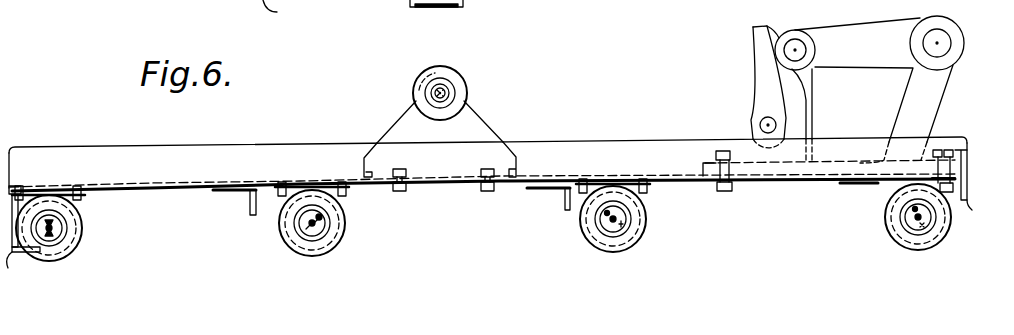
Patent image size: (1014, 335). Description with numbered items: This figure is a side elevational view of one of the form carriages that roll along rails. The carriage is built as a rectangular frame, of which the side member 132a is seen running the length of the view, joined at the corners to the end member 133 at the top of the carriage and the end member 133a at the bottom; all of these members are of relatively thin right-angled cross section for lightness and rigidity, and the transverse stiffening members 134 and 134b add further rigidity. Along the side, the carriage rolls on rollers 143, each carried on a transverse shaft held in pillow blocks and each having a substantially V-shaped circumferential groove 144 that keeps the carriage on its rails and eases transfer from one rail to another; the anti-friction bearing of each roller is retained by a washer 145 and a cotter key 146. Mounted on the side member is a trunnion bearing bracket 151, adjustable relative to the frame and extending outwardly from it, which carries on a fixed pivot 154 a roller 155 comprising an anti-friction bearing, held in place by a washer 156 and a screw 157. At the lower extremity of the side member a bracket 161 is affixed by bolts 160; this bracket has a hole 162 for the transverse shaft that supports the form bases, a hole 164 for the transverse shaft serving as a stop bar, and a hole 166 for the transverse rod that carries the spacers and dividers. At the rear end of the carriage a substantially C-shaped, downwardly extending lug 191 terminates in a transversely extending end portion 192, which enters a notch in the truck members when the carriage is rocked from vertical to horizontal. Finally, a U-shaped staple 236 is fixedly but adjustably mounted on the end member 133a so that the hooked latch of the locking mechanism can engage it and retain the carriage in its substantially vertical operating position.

The side member 132a is at (272, 147).
The end member 133 is at (17, 186).
The end member 133a is at (972, 150).
The transverse stiffening member 134 is at (233, 197).
The transverse stiffening member 134b is at (852, 188).
The roller 143 is at (347, 238).
The V-shaped circumferential groove 144 is at (285, 10).
The washer 145 is at (316, 236).
The cotter key 146 is at (322, 217).
The trunnion bearing bracket 151 is at (478, 122).
The fixed pivot 154 is at (430, 8).
The roller 155 is at (466, 2).
The washer 156 is at (445, 9).
The screw 157 is at (449, 93).
The bolt 160 is at (721, 150).
The bracket 161 is at (748, 62).
The hole 162 is at (939, 42).
The hole 164 is at (797, 48).
The hole 166 is at (766, 124).
The C-shaped lug 191 is at (9, 256).
The end portion 192 is at (38, 252).
The U-shaped staple 236 is at (970, 210).